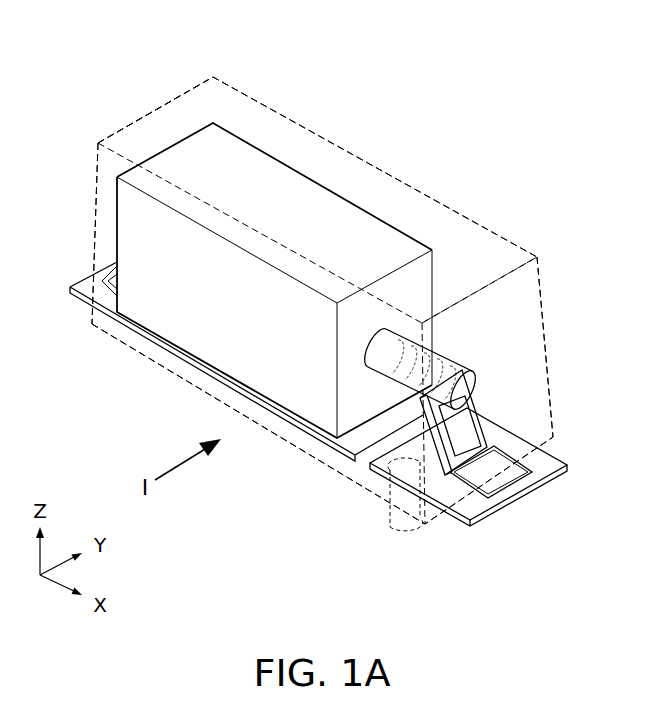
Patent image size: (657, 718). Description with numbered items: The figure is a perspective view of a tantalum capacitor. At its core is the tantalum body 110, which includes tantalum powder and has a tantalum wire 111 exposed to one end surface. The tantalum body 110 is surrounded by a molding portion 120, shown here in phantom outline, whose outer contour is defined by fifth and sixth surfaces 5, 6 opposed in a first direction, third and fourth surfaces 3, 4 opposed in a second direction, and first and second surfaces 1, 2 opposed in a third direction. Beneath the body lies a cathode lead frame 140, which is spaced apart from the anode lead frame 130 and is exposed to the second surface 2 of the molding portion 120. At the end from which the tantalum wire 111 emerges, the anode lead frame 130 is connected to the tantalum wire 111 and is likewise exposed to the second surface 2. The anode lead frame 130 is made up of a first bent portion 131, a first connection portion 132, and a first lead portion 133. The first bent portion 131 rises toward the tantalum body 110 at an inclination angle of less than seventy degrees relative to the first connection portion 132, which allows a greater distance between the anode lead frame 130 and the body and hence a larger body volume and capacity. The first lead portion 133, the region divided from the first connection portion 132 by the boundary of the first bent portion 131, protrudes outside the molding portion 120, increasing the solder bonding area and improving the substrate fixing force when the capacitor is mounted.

The first surface 1 is at (256, 112).
The second surface 2 is at (355, 452).
The third surface 3 is at (108, 217).
The fourth surface 4 is at (460, 247).
The fifth surface 5 is at (517, 337).
The sixth surface 6 is at (153, 140).
The tantalum body 110 is at (323, 207).
The tantalum wire 111 is at (477, 383).
The molding portion 120 is at (408, 185).
The anode lead frame 130 is at (457, 532).
The first bent portion 131 is at (534, 473).
The first connection portion 132 is at (393, 472).
The first lead portion 133 is at (477, 507).
The cathode lead frame 140 is at (108, 334).